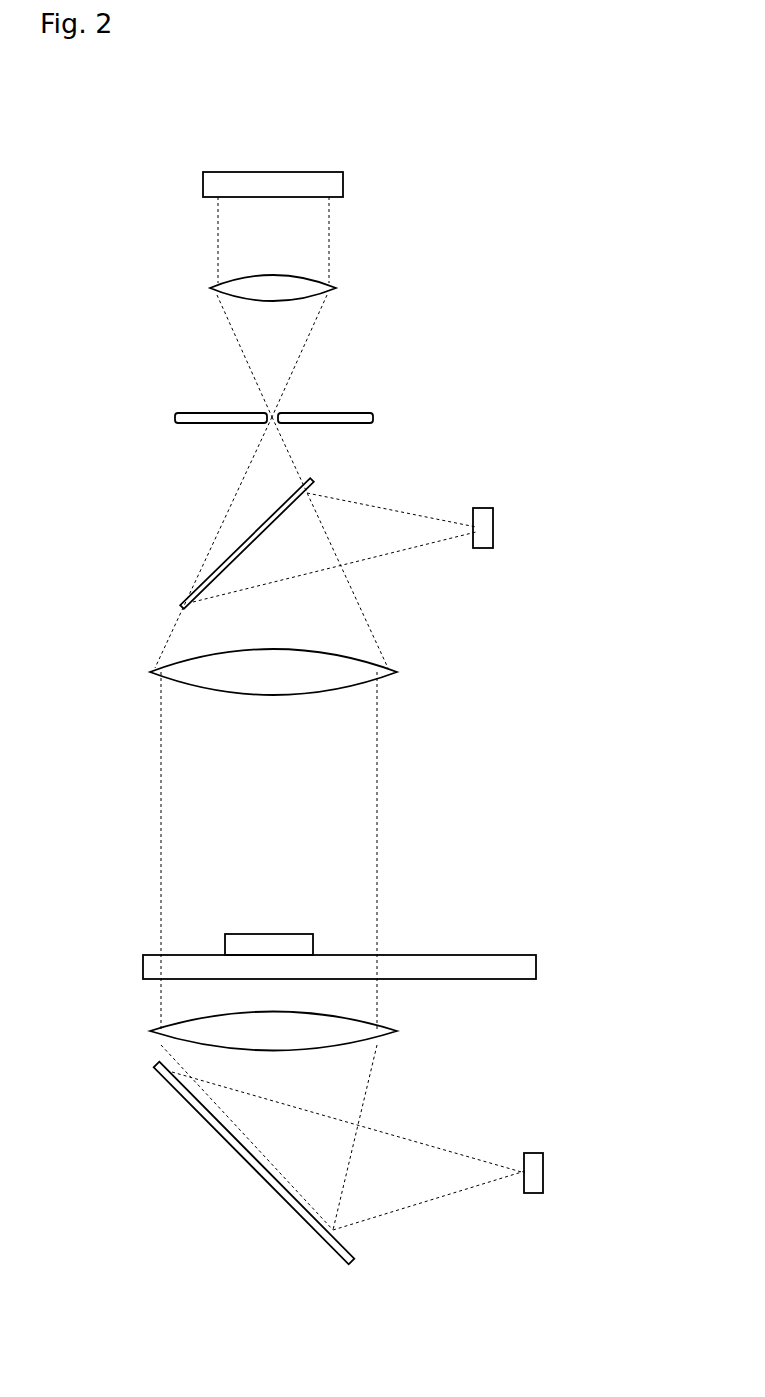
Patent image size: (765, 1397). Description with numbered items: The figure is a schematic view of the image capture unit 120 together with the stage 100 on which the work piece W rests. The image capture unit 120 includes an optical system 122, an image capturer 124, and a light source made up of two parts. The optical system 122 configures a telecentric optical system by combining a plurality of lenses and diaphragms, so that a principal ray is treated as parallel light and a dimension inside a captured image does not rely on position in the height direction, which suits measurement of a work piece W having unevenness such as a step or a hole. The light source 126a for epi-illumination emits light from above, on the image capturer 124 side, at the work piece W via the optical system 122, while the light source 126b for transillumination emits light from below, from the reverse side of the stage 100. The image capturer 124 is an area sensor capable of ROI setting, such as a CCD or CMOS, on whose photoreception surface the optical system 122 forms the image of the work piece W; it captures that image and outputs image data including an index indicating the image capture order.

The image capture unit 120 is at (340, 56).
The optical system 122 is at (145, 1160).
The image capturer 124 is at (317, 172).
The light source for epi-illumination 126a is at (487, 540).
The light source for transillumination 126b is at (533, 1180).
The stage 100 is at (527, 955).
The work piece W is at (313, 934).